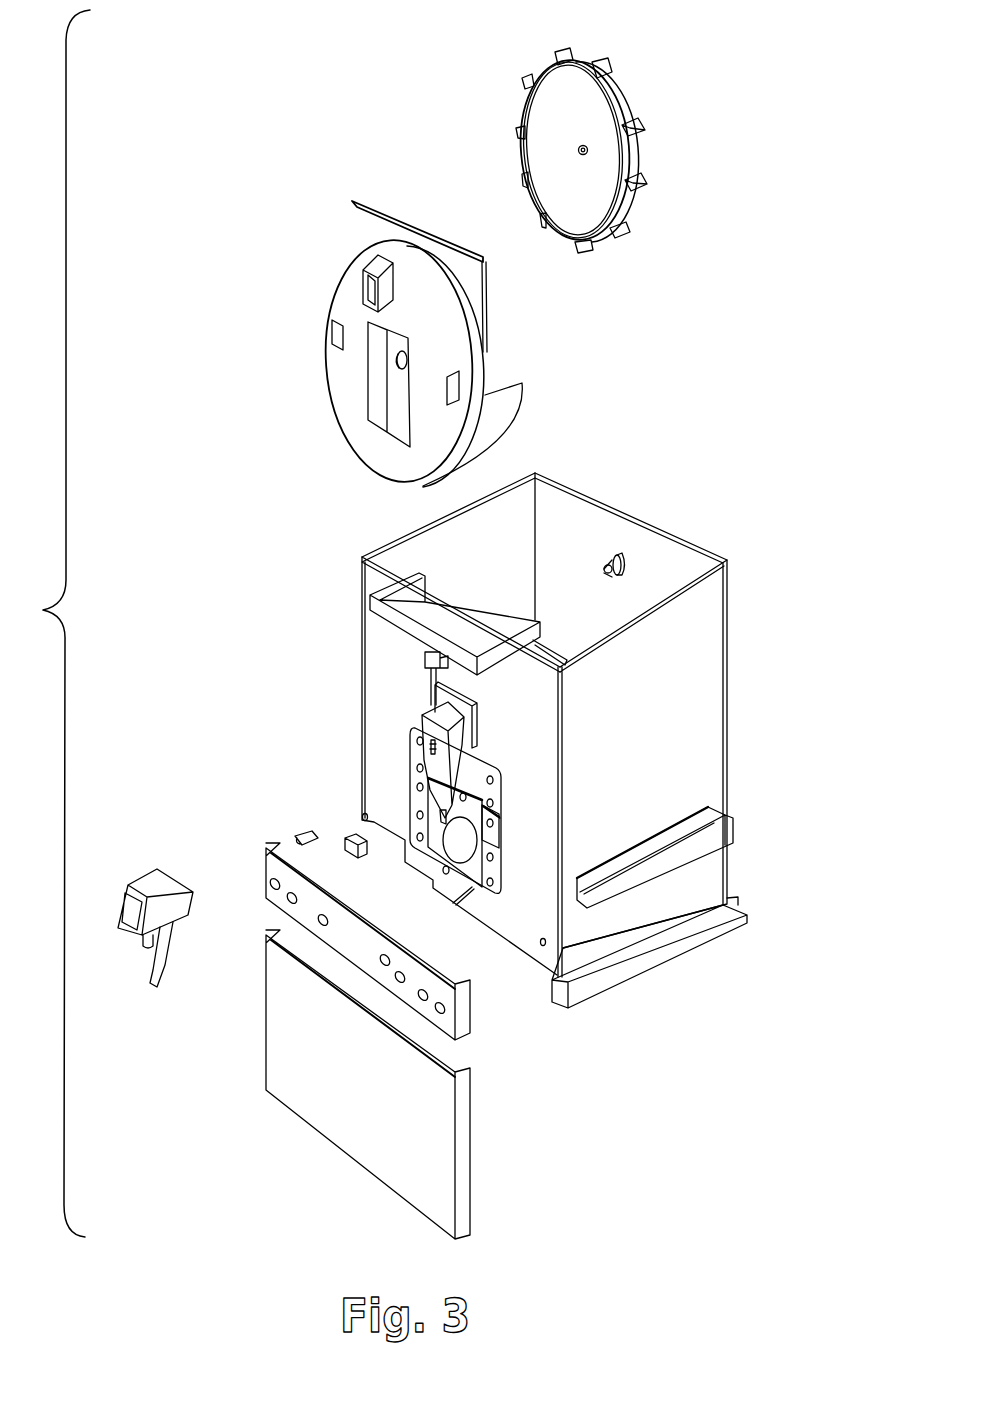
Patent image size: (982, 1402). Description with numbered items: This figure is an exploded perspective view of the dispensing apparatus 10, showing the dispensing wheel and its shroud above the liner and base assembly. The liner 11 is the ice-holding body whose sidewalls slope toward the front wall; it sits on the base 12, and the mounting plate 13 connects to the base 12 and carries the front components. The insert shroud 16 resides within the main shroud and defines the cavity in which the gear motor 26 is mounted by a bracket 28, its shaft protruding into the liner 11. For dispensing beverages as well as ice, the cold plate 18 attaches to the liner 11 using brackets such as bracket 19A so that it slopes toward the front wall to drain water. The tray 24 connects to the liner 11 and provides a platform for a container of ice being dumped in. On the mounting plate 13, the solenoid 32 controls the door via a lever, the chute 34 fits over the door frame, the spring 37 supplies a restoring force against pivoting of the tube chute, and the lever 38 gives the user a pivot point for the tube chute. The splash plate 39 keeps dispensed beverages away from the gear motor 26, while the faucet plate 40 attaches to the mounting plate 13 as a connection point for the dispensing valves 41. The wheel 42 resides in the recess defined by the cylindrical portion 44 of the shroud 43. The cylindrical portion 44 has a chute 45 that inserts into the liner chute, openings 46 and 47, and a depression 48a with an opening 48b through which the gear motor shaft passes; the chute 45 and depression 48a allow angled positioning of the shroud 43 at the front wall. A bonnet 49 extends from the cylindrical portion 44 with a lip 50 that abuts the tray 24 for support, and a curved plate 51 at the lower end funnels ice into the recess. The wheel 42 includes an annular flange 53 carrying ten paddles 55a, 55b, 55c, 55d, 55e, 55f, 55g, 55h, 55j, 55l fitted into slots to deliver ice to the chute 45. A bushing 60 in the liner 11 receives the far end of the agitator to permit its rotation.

The dispensing apparatus 10 is at (620, 1073).
The liner 11 is at (654, 756).
The base 12 is at (667, 965).
The mounting plate 13 is at (527, 718).
The insert shroud 16 is at (478, 763).
The cold plate 18 is at (722, 815).
The bracket 19A is at (652, 830).
The tray 24 is at (445, 617).
The gear motor 26 is at (468, 852).
The bracket 28 is at (497, 813).
The solenoid 32 is at (425, 657).
The chute 34 is at (426, 714).
The spring 37 is at (429, 746).
The lever 38 is at (440, 816).
The splash plate 39 is at (332, 1087).
The faucet plate 40 is at (360, 922).
The dispensing valves 41 is at (180, 903).
The wheel 42 is at (609, 150).
The shroud 43 is at (381, 338).
The cylindrical portion 44 is at (430, 329).
The chute 45 is at (363, 290).
The opening 46 is at (448, 394).
The opening 47 is at (333, 333).
The depression 48a is at (398, 422).
The opening 48b is at (397, 360).
The bonnet 49 is at (489, 285).
The lip 50 is at (412, 214).
The curved plate 51 is at (498, 410).
The annular flange 53 is at (636, 206).
The paddle 55a is at (606, 62).
The paddle 55b is at (638, 120).
The paddle 55c is at (642, 176).
The paddle 55d is at (627, 230).
The paddle 55e is at (589, 252).
The paddle 55f is at (543, 228).
The paddle 55g is at (523, 186).
The paddle 55h is at (519, 133).
The paddle 55j is at (560, 53).
The paddle 55l is at (526, 83).
The bushing 60 is at (604, 570).